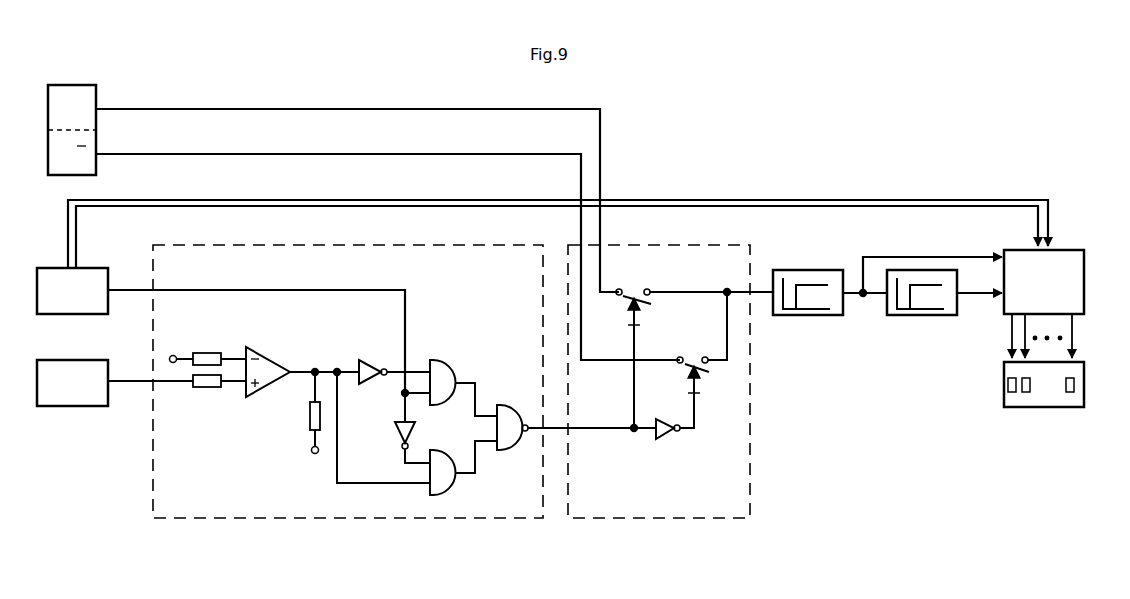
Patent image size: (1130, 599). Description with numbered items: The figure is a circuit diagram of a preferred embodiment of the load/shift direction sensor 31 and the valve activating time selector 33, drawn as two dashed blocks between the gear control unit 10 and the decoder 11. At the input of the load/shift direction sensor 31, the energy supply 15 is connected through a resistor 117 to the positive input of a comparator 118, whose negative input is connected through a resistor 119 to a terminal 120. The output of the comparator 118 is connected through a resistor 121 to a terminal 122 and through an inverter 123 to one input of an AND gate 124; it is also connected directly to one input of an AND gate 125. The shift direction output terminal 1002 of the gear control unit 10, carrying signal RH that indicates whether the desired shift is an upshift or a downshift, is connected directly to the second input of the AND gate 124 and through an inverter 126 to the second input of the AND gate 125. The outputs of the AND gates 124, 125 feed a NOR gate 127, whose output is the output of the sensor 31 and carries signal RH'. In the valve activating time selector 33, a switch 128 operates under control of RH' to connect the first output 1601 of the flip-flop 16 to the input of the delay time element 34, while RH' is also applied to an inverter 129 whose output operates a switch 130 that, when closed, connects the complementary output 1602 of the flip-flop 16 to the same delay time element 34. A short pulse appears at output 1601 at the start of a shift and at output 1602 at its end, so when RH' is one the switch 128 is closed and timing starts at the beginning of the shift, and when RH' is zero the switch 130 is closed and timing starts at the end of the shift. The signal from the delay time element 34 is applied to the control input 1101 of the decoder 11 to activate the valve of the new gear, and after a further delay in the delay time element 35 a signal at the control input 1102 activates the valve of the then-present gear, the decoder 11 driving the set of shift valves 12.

The flip-flop 16 is at (72, 90).
The first output of flip-flop 1601 is at (97, 108).
The complementary output of flip-flop 1602 is at (97, 156).
The gear control unit 10 is at (56, 272).
The shift direction output terminal 1002 is at (110, 288).
The energy supply 15 is at (58, 398).
The load/shift direction sensor 31 is at (340, 520).
The terminal 120 is at (172, 355).
The resistor 119 is at (208, 353).
The resistor 117 is at (204, 388).
The comparator 118 is at (270, 365).
The resistor 121 is at (310, 416).
The terminal 122 is at (311, 452).
The inverter 123 is at (366, 360).
The AND gate 124 is at (442, 370).
The AND gate 125 is at (442, 480).
The inverter 126 is at (395, 432).
The NOR gate 127 is at (516, 445).
The valve activating time selector 33 is at (660, 520).
The switch 128 is at (636, 288).
The inverter 129 is at (670, 436).
The switch 130 is at (686, 356).
The delay time element 34 is at (805, 316).
The further delay time element 35 is at (926, 316).
The control input of decoder 1101 is at (996, 254).
The control input of decoder 1102 is at (1000, 298).
The decoder 11 is at (1065, 258).
The shift valves 12 is at (1053, 398).